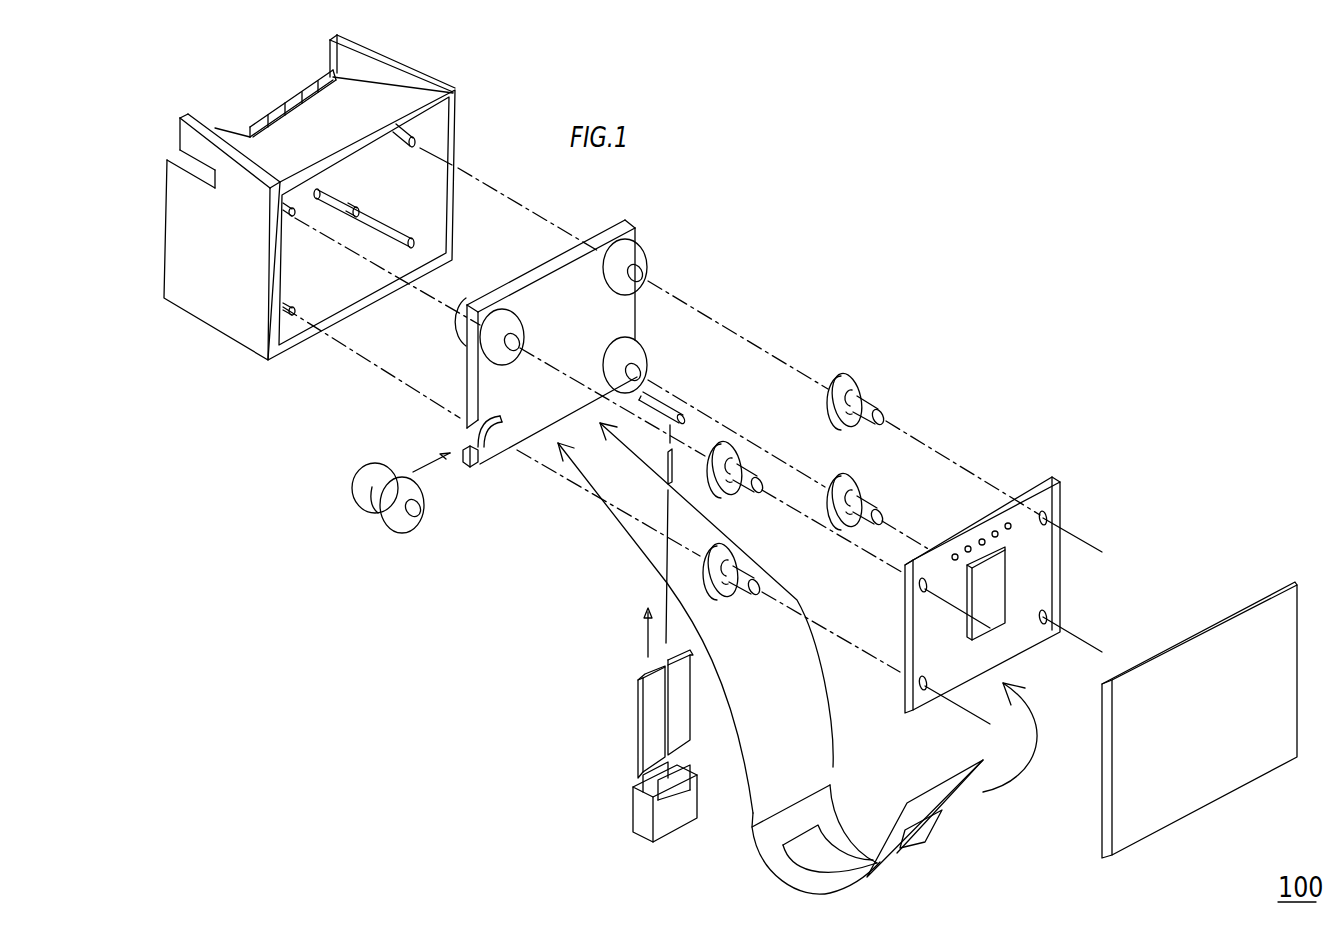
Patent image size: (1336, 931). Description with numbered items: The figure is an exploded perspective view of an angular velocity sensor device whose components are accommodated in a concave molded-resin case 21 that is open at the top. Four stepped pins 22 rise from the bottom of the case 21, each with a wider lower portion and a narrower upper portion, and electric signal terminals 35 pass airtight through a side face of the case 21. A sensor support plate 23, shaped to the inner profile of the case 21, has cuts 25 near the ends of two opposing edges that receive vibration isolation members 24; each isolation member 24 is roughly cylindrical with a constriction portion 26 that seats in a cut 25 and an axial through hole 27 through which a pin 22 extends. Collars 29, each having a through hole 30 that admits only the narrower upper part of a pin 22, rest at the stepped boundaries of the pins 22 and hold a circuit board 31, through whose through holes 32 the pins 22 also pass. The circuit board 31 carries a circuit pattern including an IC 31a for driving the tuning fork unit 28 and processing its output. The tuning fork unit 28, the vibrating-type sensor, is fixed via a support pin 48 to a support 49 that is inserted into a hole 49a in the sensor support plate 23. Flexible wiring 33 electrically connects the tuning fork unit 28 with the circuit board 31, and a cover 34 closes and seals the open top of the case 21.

The case 21 is at (437, 82).
The pins 22 is at (417, 134).
The sensor support plate 23 is at (626, 226).
The vibration isolation members 24 is at (364, 531).
The cuts 25 is at (497, 450).
The constriction portion 26 is at (373, 511).
The through hole 27 is at (420, 510).
The tuning fork unit 28 is at (625, 720).
The collars 29 is at (920, 373).
The through hole 30 is at (888, 418).
The circuit board 31 is at (1044, 600).
The IC 31a is at (993, 568).
The through holes 32 is at (1048, 514).
The flexible wiring 33 is at (947, 793).
The cover 34 is at (1203, 780).
The electric signal terminals 35 is at (270, 102).
The support pin 48 is at (660, 467).
The support 49 is at (670, 393).
The hole 49a is at (557, 345).